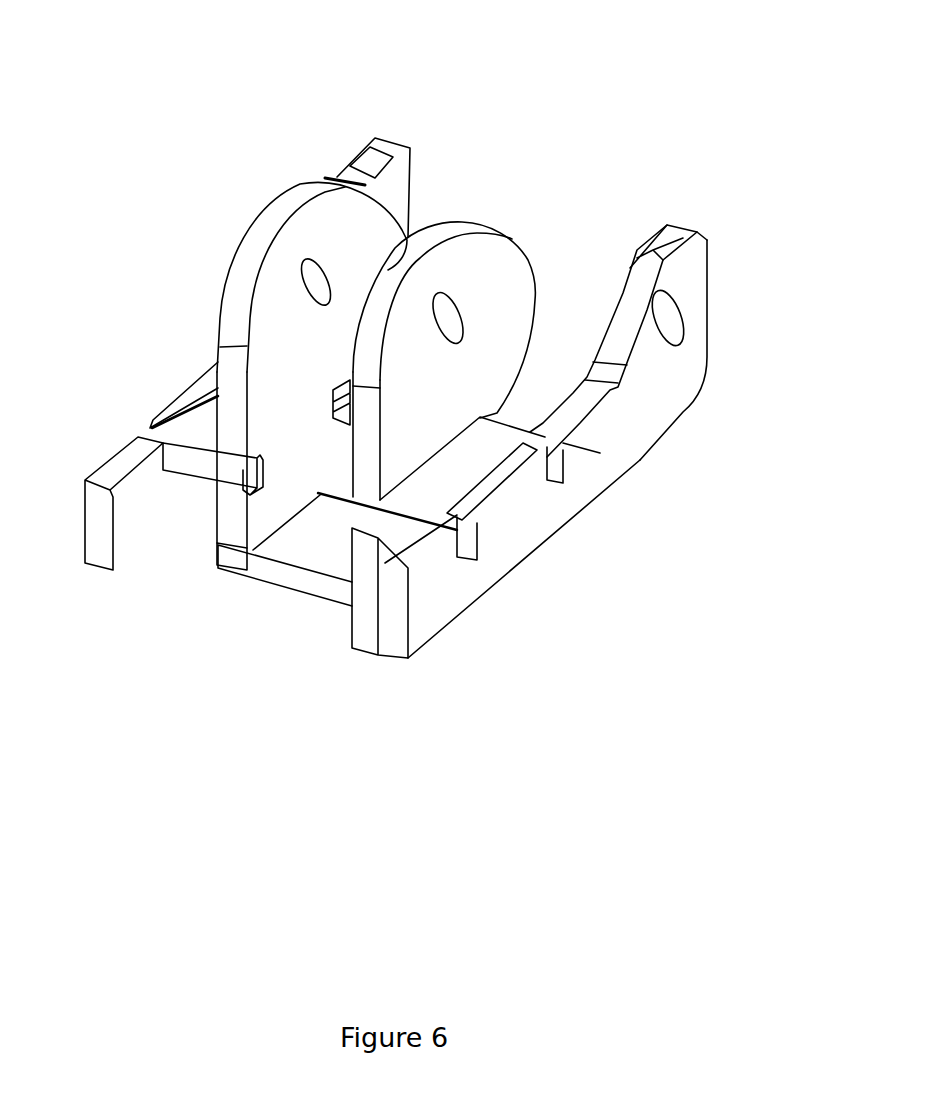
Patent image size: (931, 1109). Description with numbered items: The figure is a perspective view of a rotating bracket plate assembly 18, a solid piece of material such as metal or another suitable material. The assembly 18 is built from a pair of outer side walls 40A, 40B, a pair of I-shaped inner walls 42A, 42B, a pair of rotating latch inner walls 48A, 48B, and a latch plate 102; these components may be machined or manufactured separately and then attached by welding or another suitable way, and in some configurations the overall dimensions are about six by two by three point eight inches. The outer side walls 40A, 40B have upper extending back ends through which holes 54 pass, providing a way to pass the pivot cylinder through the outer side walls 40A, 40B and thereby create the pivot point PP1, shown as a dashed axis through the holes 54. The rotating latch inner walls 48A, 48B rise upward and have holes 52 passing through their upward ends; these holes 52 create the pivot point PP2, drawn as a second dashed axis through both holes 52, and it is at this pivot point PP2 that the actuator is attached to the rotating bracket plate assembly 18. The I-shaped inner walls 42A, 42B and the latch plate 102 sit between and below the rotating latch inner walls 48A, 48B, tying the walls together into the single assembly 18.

The rotating bracket plate assembly 18 is at (112, 98).
The rotating latch inner wall 48A is at (293, 197).
The rotating latch inner wall 48B is at (450, 266).
The holes 54 is at (322, 158).
The holes 52 is at (318, 273).
The outer side wall 40A is at (195, 403).
The outer side wall 40B is at (513, 523).
The I-shaped inner wall 42A is at (200, 473).
The I-shaped inner wall 42B is at (465, 465).
The latch plate 102 is at (318, 551).
The pivot point PP1 is at (548, 283).
The pivot point PP2 is at (198, 245).